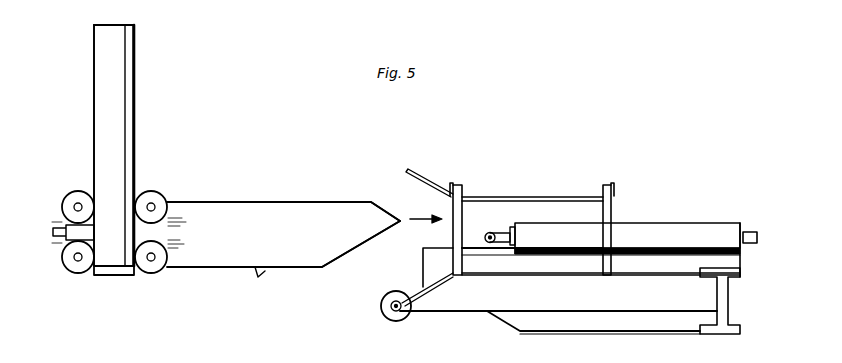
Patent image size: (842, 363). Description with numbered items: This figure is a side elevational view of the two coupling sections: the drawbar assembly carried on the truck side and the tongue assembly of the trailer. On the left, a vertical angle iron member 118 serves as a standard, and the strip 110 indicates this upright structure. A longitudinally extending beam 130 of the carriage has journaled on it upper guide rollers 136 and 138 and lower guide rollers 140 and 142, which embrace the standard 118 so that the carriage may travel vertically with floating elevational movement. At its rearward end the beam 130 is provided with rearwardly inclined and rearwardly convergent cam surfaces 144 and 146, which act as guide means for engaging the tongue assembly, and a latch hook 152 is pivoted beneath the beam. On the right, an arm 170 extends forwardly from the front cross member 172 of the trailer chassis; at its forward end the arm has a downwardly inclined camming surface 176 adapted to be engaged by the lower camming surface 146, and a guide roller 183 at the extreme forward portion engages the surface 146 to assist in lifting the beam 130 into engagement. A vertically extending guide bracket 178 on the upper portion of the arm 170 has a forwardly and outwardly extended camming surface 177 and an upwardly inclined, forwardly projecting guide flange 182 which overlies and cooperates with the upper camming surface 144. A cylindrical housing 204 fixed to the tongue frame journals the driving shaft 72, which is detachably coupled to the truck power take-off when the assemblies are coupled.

The strip material 110 is at (88, 44).
The vertical angle iron member 118 is at (118, 97).
The longitudinally extending beam 130 is at (233, 208).
The guide roller 136 is at (71, 198).
The guide roller 138 is at (158, 196).
The guide roller 140 is at (78, 266).
The guide roller 142 is at (158, 268).
The cam surface 144 is at (384, 202).
The cam surface 146 is at (349, 258).
The latch hook 152 is at (264, 274).
The arm 170 is at (508, 292).
The front cross member 172 is at (723, 320).
The camming surface 176 is at (417, 287).
The camming surface 177 is at (551, 260).
The guide bracket 178 is at (430, 259).
The guide flange 182 is at (425, 177).
The guide roller 183 is at (392, 319).
The cylindrical housing 204 is at (653, 232).
The driving shaft 72 is at (752, 232).